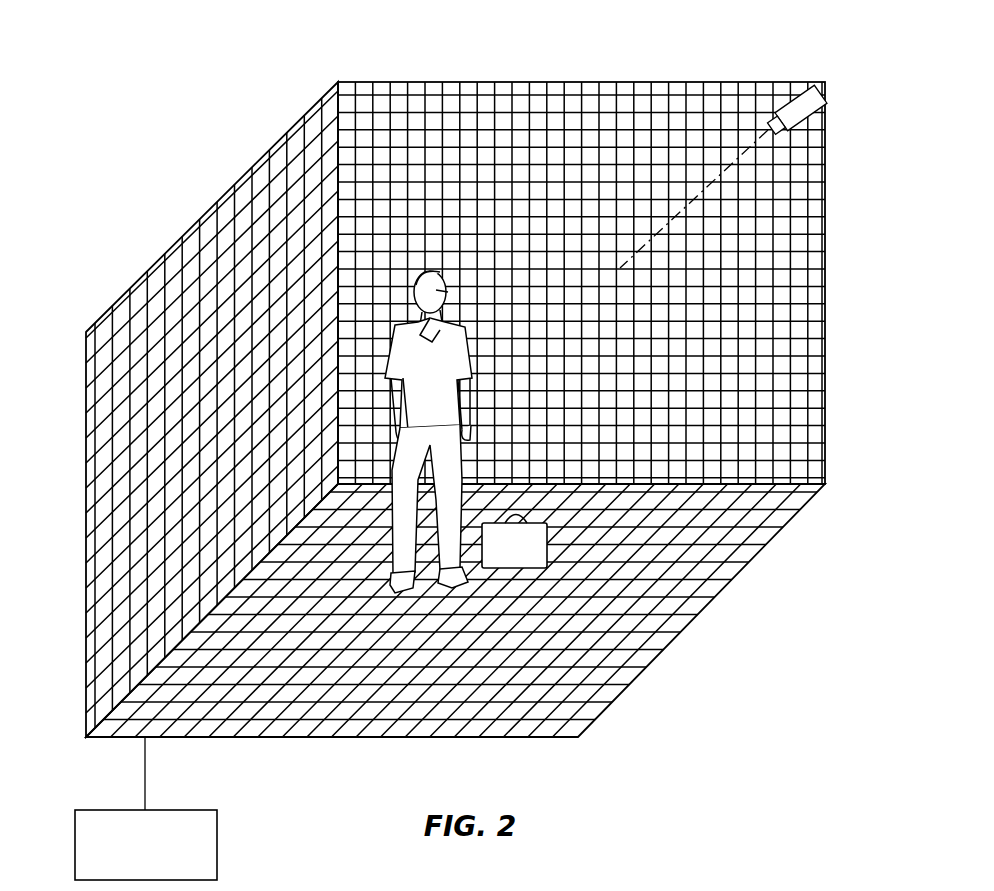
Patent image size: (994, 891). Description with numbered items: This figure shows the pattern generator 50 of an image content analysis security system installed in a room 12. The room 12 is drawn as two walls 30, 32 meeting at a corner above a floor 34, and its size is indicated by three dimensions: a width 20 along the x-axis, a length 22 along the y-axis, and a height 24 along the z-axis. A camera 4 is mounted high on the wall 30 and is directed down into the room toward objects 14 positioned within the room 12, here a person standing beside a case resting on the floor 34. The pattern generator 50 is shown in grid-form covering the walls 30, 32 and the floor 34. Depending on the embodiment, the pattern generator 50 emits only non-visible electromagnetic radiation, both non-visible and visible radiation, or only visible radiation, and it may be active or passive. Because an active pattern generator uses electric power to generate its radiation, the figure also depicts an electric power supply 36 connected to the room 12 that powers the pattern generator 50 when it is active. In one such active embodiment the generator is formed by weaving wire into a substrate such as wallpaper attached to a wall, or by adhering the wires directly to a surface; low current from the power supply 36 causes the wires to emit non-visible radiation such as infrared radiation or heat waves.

The room 12 is at (155, 100).
The camera 4 is at (803, 110).
The objects 14 is at (527, 558).
The width 20 is at (338, 48).
The length 22 is at (85, 317).
The height 24 is at (46, 335).
The wall 30 is at (770, 263).
The wall 32 is at (100, 682).
The floor 34 is at (557, 694).
The electric power supply 36 is at (217, 835).
The pattern generator 50 is at (130, 355).